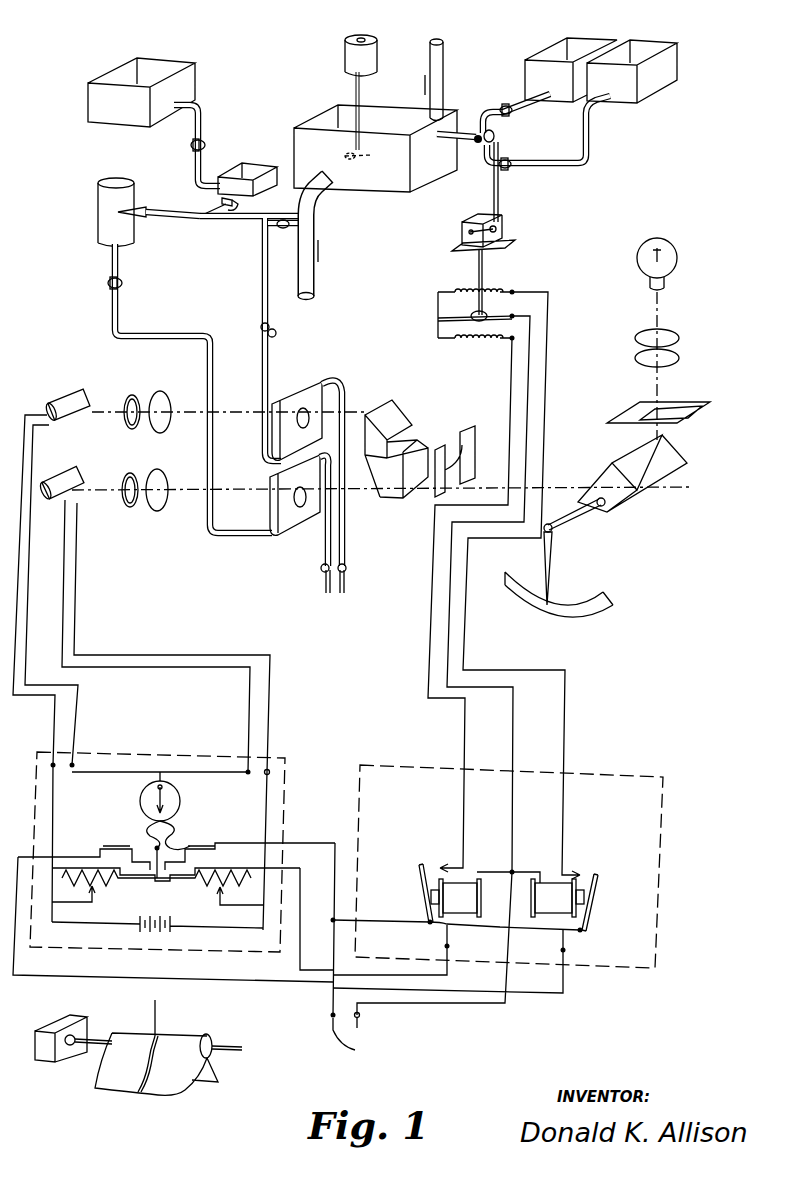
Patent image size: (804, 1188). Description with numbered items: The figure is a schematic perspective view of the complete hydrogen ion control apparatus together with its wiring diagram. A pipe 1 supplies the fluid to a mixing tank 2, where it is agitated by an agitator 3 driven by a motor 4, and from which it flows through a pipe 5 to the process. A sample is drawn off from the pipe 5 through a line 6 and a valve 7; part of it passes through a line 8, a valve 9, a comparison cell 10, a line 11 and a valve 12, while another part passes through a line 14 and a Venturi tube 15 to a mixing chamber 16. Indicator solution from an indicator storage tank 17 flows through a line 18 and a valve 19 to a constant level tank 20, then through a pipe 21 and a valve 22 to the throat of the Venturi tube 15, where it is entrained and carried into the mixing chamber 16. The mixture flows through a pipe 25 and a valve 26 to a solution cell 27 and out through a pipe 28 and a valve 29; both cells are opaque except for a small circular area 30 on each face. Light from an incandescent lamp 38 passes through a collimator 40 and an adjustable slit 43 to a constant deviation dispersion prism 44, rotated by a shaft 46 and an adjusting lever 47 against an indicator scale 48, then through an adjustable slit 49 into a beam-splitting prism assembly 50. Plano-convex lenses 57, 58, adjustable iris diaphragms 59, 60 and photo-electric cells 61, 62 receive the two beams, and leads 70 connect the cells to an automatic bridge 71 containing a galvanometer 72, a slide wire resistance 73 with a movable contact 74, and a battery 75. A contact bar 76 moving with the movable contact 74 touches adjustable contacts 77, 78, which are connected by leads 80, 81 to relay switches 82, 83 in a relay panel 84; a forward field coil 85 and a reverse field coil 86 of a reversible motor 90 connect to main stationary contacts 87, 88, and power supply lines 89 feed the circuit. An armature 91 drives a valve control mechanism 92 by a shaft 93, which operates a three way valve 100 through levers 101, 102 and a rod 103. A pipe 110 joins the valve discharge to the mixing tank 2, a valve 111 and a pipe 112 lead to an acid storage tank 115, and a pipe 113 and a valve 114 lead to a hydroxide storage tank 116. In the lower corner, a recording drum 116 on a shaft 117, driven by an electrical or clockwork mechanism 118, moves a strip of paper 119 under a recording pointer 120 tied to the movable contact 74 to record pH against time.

The pipe 1 is at (444, 56).
The mixing tank 2 is at (394, 191).
The agitator 3 is at (340, 146).
The motor 4 is at (345, 50).
The pipe 5 is at (318, 275).
The line 6 is at (318, 217).
The valve 7 is at (285, 229).
The line 8 is at (270, 316).
The valve 9 is at (274, 338).
The comparison cell 10 is at (312, 401).
The line 11 is at (347, 545).
The valve 12 is at (347, 572).
The line 14 is at (240, 221).
The Venturi tube 15 is at (196, 220).
The mixing chamber 16 is at (130, 237).
The indicator storage tank 17 is at (112, 72).
The line 18 is at (201, 113).
The valve 19 is at (206, 143).
The constant level tank 20 is at (247, 165).
The pipe 21 is at (240, 206).
The valve 22 is at (218, 202).
The pipe 25 is at (112, 268).
The valve 26 is at (122, 287).
The solution cell 27 is at (274, 506).
The pipe 28 is at (325, 558).
The valve 29 is at (321, 572).
The circular area 30 is at (301, 410).
The incandescent lamp 38 is at (673, 283).
The collimator 40 is at (681, 350).
The adjustable slit 43 is at (673, 401).
The constant deviation dispersion prism 44 is at (660, 486).
The shaft 46 is at (580, 520).
The adjusting lever 47 is at (553, 568).
The indicator scale 48 is at (582, 618).
The adjustable slit 49 is at (462, 442).
The beam-splitting prism assembly 50 is at (406, 411).
The plano-convex lens 57 is at (160, 391).
The plano-convex lens 58 is at (158, 512).
The adjustable iris diaphragm 59 is at (125, 395).
The adjustable iris diaphragm 60 is at (127, 508).
The photo-electric cell 61 is at (60, 397).
The photo-electric cell 62 is at (61, 474).
The leads 70 is at (75, 606).
The automatic bridge 71 is at (176, 854).
The galvanometer 72 is at (139, 800).
The slide wire resistance 73 is at (176, 880).
The movable contact 74 is at (154, 880).
The battery 75 is at (158, 936).
The contact bar 76 is at (150, 849).
The adjustable contact 77 is at (206, 846).
The adjustable contact 78 is at (104, 848).
The lead 80 is at (35, 983).
The lead 81 is at (300, 906).
The relay switch 82 is at (603, 895).
The relay switch 83 is at (413, 890).
The relay panel 84 is at (498, 873).
The forward field coil 85 is at (508, 291).
The reverse field coil 86 is at (492, 344).
The main stationary contact 87 is at (576, 872).
The main stationary contact 88 is at (442, 862).
The power supply lines 89 is at (360, 1040).
The reversible motor 90 is at (473, 317).
The armature 91 is at (438, 300).
The valve control mechanism 92 is at (460, 238).
The shaft 93 is at (477, 266).
The three way valve 100 is at (487, 136).
The lever 101 is at (497, 143).
The lever 102 is at (470, 230).
The rod 103 is at (499, 205).
The pipe 110 is at (462, 128).
The valve 111 is at (509, 170).
The pipe 112 is at (590, 160).
The pipe 113 is at (488, 110).
The valve 114 is at (505, 104).
The acid storage tank 115 is at (678, 66).
The hydroxide storage tank 116 is at (532, 60).
The shaft 117 is at (95, 1035).
The electrical or clockwork mechanism 118 is at (42, 1060).
The strip of paper 119 is at (115, 1082).
The recording pointer 120 is at (160, 1032).